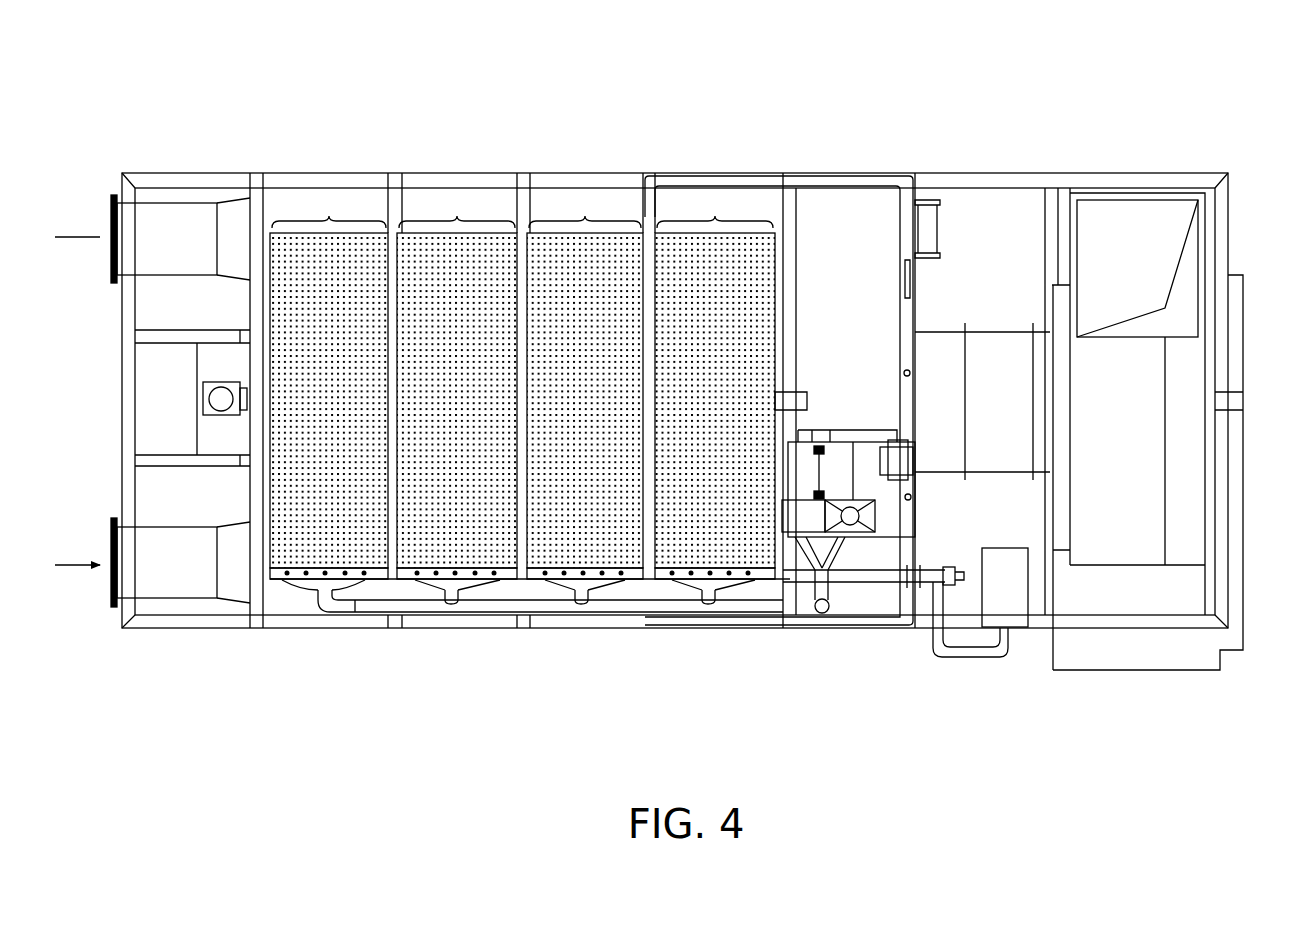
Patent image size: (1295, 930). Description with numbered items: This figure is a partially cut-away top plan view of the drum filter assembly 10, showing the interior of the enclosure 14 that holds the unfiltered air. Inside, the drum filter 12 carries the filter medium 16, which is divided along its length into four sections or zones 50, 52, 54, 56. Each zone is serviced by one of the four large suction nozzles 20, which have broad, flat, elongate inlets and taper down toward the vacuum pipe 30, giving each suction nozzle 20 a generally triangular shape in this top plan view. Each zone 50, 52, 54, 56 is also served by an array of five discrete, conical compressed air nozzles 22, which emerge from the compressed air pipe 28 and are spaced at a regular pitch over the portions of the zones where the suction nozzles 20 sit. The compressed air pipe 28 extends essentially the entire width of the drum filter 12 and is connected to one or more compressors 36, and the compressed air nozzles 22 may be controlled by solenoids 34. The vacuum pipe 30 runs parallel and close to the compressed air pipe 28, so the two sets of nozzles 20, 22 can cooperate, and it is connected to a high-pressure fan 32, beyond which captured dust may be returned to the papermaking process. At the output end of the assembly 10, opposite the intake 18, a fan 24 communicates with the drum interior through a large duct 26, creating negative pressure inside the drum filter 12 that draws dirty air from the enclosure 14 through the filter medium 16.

The drum filter assembly 10 is at (649, 382).
The drum filter 12 is at (522, 349).
The enclosure 14 is at (425, 630).
The filter medium 16 is at (718, 235).
The intake 18 is at (180, 218).
The suction nozzles 20 is at (315, 585).
The compressed air nozzles 22 is at (290, 580).
The fan 24 is at (1195, 463).
The duct 26 is at (945, 347).
The compressed air pipe 28 is at (852, 592).
The vacuum pipe 30 is at (553, 602).
The high-pressure fan 32 is at (860, 500).
The solenoids 34 is at (955, 567).
The compressors 36 is at (1017, 618).
The first zone 50 is at (329, 379).
The second zone 52 is at (457, 379).
The third zone 54 is at (585, 379).
The fourth zone 56 is at (715, 379).